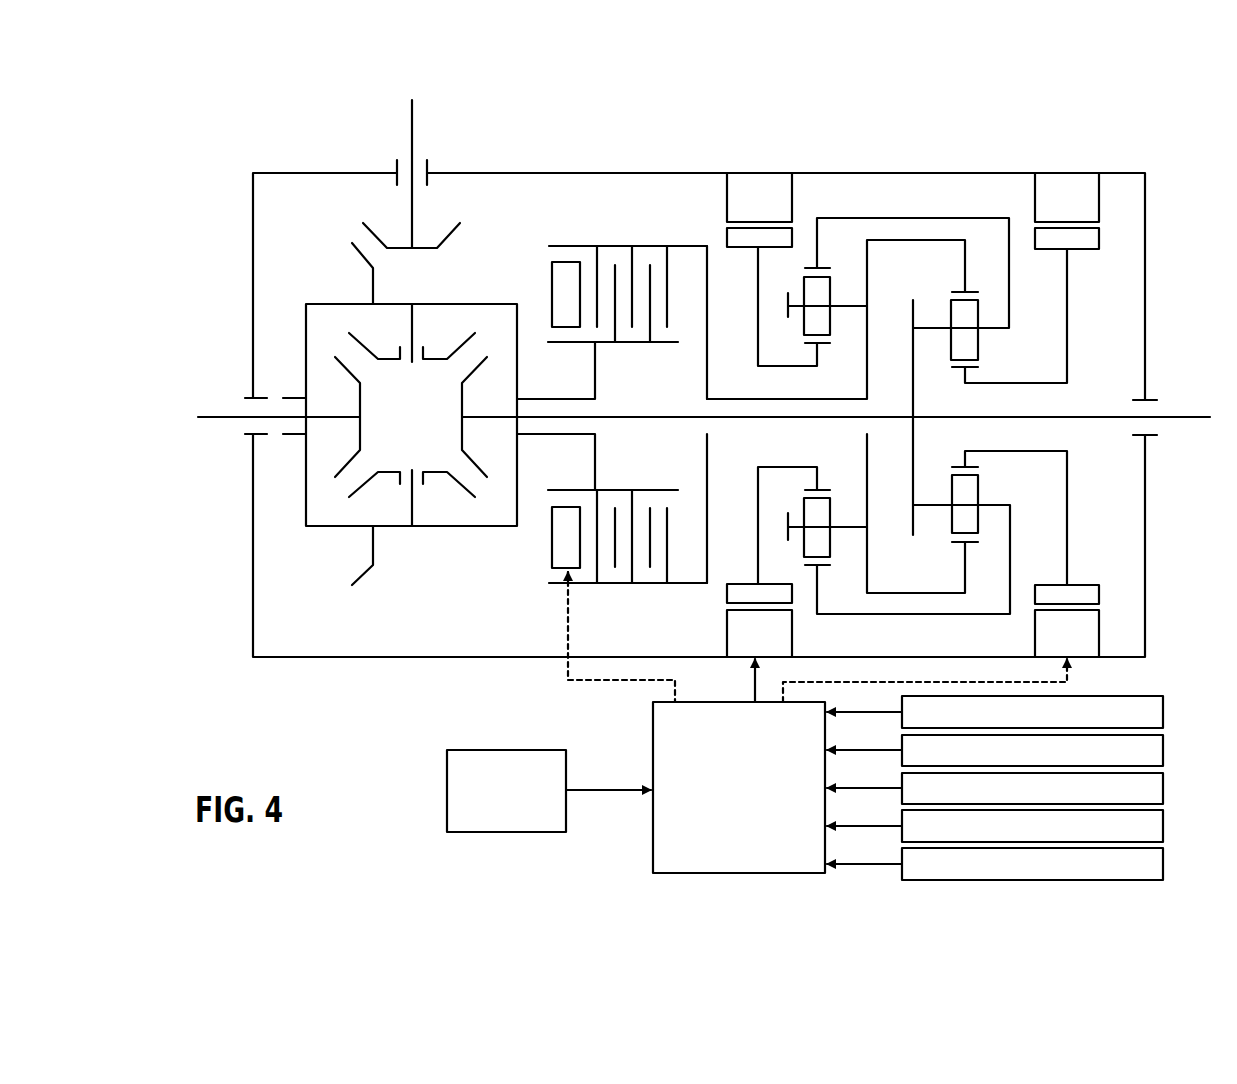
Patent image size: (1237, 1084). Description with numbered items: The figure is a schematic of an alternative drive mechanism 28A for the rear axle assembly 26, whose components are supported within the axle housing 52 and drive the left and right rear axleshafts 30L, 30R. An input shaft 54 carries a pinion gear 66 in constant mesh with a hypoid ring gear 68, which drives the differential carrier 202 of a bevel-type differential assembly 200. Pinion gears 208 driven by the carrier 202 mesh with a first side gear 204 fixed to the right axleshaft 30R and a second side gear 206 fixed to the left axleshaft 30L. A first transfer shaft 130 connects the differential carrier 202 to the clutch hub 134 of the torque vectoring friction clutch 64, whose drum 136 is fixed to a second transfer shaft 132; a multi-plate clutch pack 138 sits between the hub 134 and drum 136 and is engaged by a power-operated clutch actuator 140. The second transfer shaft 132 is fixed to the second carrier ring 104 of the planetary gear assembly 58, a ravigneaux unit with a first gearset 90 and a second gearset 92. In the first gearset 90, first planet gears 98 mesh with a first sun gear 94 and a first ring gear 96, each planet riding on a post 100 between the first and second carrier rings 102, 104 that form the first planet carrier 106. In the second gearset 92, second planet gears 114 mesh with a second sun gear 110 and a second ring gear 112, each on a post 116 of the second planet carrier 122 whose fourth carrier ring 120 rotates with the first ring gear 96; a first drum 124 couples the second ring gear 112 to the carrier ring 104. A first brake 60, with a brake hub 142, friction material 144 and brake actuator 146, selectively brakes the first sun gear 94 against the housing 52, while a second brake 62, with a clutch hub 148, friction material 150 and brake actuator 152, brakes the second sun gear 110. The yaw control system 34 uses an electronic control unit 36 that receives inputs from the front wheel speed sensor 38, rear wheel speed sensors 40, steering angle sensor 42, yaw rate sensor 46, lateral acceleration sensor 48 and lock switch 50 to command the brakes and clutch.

The rear axle assembly 26 is at (1148, 118).
The drive mechanism 28A is at (897, 320).
The left rear axleshaft 30L is at (224, 413).
The right rear axleshaft 30R is at (1178, 414).
The yaw control system 34 is at (835, 754).
The electronic control unit 36 is at (657, 828).
The front wheel speed sensor 38 is at (1165, 706).
The rear wheel speed sensors 40 is at (1165, 745).
The steering angle sensor 42 is at (1165, 783).
The yaw rate sensor 46 is at (1165, 821).
The lateral acceleration sensor 48 is at (1165, 860).
The lock switch 50 is at (550, 757).
The axle housing 52 is at (1147, 310).
The input shaft 54 is at (414, 140).
The planetary gear assembly 58 is at (967, 206).
The first brake 60 is at (745, 166).
The second brake 62 is at (1100, 165).
The torque vectoring friction clutch 64 is at (610, 240).
The pinion gear 66 is at (452, 238).
The hypoid ring gear 68 is at (365, 570).
The first gearset 90 is at (839, 480).
The second gearset 92 is at (946, 362).
The first sun gear 94 is at (808, 478).
The first ring gear 96 is at (817, 230).
The first planet gears 98 is at (808, 326).
The post 100 is at (793, 518).
The first carrier ring 102 is at (790, 300).
The second carrier ring 104 is at (890, 552).
The first planet carrier 106 is at (856, 567).
The second sun gear 110 is at (966, 378).
The second ring gear 112 is at (962, 563).
The second planet gears 114 is at (970, 488).
The post 116 is at (928, 503).
The fourth carrier ring 120 is at (1013, 553).
The second planet carrier 122 is at (926, 316).
The first drum 124 is at (912, 240).
The first transfer shaft 130 is at (547, 395).
The second transfer shaft 132 is at (726, 398).
The clutch hub 134 is at (597, 375).
The drum 136 is at (684, 246).
The multi-plate clutch pack 138 is at (688, 512).
The power-operated clutch actuator 140 is at (560, 542).
The brake hub 142 is at (757, 283).
The friction material 144 is at (733, 596).
The power-operated brake actuator 146 is at (733, 630).
The clutch hub 148 is at (1068, 310).
The friction material 150 is at (1096, 235).
The power-operated brake actuator 152 is at (1084, 637).
The differential assembly 200 is at (362, 424).
The differential carrier 202 is at (466, 304).
The first side gear 204 is at (463, 428).
The second side gear 206 is at (363, 425).
The pinion gears 208 is at (412, 415).